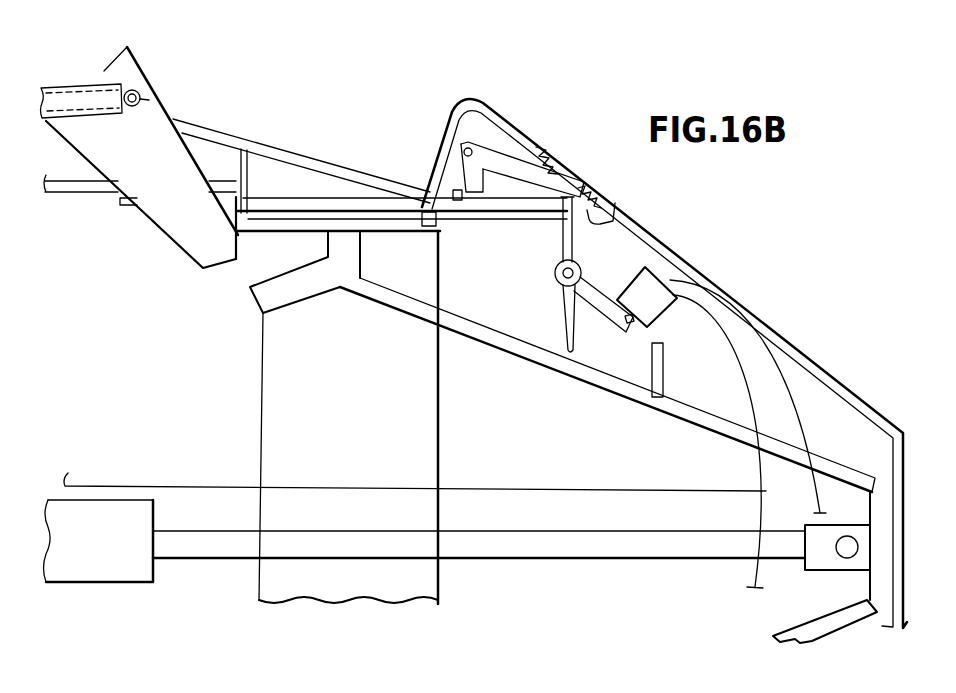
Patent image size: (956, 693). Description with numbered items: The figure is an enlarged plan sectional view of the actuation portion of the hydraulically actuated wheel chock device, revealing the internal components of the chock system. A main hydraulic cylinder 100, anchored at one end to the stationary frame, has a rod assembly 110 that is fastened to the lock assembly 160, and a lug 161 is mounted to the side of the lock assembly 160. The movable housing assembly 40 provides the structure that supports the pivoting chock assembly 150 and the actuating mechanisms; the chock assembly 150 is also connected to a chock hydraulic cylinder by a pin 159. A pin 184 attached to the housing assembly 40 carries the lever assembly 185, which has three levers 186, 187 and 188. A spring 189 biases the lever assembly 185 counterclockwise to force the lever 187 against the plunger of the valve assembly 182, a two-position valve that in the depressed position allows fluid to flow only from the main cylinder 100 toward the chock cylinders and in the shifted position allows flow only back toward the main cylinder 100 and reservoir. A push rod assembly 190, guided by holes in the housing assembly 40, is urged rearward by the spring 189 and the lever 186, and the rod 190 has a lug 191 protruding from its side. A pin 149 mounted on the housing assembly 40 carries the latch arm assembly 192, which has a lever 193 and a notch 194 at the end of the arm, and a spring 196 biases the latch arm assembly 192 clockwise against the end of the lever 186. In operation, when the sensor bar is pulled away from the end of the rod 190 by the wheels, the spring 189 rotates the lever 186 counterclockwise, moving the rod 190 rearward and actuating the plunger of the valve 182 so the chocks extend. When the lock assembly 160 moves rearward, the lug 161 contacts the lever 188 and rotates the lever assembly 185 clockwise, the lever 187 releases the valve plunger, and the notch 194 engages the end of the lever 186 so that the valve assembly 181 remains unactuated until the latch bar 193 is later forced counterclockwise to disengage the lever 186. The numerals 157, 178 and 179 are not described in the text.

The housing assembly 40 is at (880, 362).
The hydraulic cylinder 100 is at (118, 572).
The rod assembly 110 is at (607, 537).
The pin 149 is at (463, 146).
The chock assembly 150 is at (173, 108).
The sensor housing 157 is at (67, 92).
The pin 159 is at (150, 100).
The lock assembly 160 is at (863, 434).
The lug 161 is at (664, 388).
The cable 178 is at (750, 397).
The rod 179 is at (647, 490).
The valve assembly 181 is at (658, 277).
The valve assembly 182 is at (636, 331).
The pin 184 is at (562, 281).
The lever assembly 185 is at (558, 256).
The lever 186 is at (577, 244).
The lever 187 is at (605, 308).
The lever 188 is at (568, 329).
The spring 189 is at (623, 213).
The push rod assembly 190 is at (474, 213).
The lug 191 is at (452, 192).
The latch arm assembly 192 is at (500, 148).
The lever 193 is at (493, 182).
The notch 194 is at (600, 191).
The spring 196 is at (561, 160).